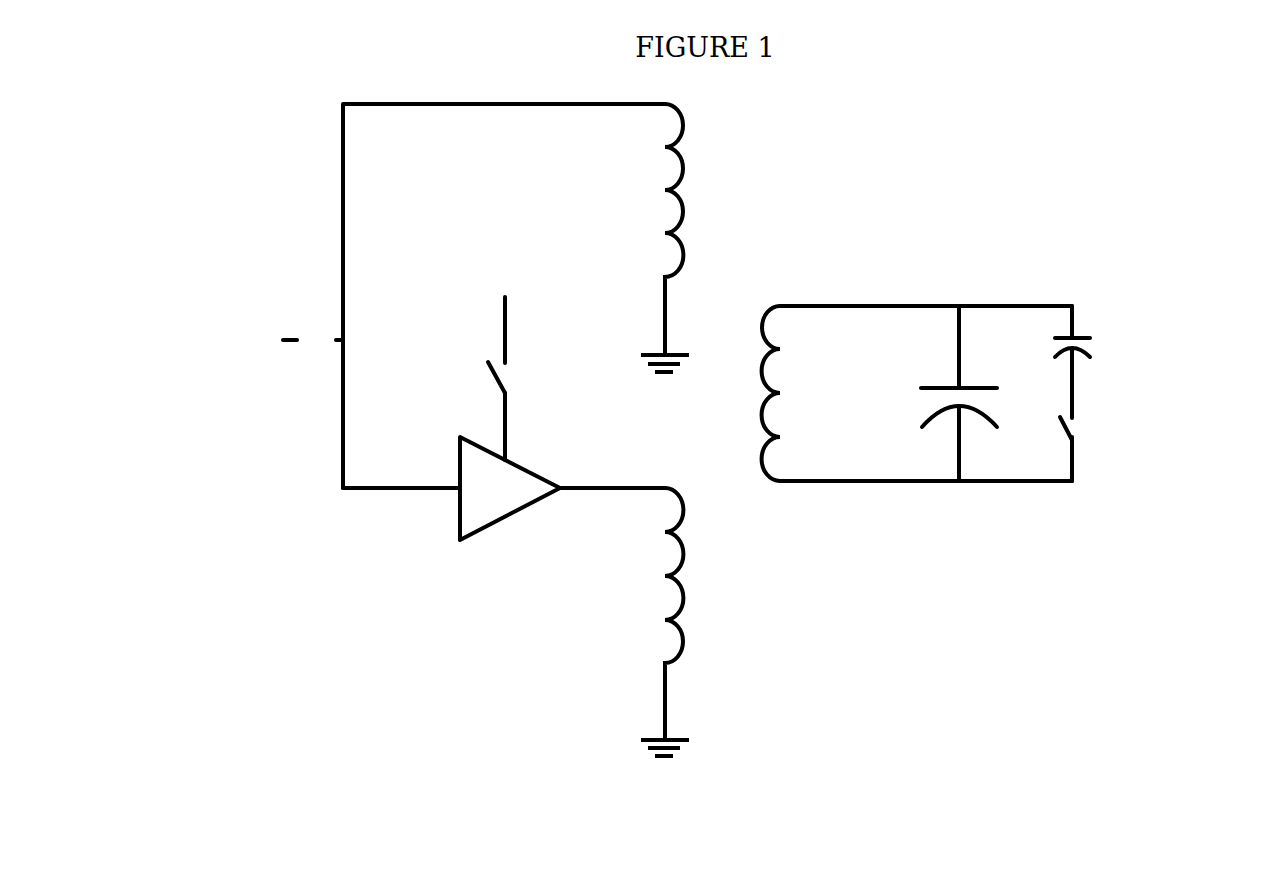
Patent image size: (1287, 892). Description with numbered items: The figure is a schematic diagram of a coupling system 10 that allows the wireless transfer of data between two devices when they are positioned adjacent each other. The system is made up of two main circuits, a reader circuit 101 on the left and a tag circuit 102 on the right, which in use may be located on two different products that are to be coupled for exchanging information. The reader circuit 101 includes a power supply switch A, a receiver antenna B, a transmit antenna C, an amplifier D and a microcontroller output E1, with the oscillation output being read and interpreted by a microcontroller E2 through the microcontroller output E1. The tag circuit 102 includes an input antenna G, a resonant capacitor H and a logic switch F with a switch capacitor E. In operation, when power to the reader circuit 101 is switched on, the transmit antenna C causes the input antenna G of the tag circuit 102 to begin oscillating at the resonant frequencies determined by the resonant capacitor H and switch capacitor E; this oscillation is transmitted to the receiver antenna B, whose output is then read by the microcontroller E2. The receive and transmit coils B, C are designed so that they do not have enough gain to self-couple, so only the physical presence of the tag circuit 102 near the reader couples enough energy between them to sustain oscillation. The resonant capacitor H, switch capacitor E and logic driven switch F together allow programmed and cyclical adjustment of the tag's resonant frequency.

The system 10 is at (432, 775).
The reader circuit 101 is at (278, 104).
The tag circuit 102 is at (970, 392).
The power supply switch A is at (503, 377).
The receiver antenna B is at (682, 218).
The transmit antenna C is at (682, 608).
The amplifier D is at (510, 488).
The switch capacitor E is at (1075, 337).
The logic switch F is at (1085, 487).
The input antenna G is at (768, 387).
The resonant capacitor H is at (973, 388).
The microcontroller output E1 is at (318, 341).
The microcontroller E2 is at (260, 341).